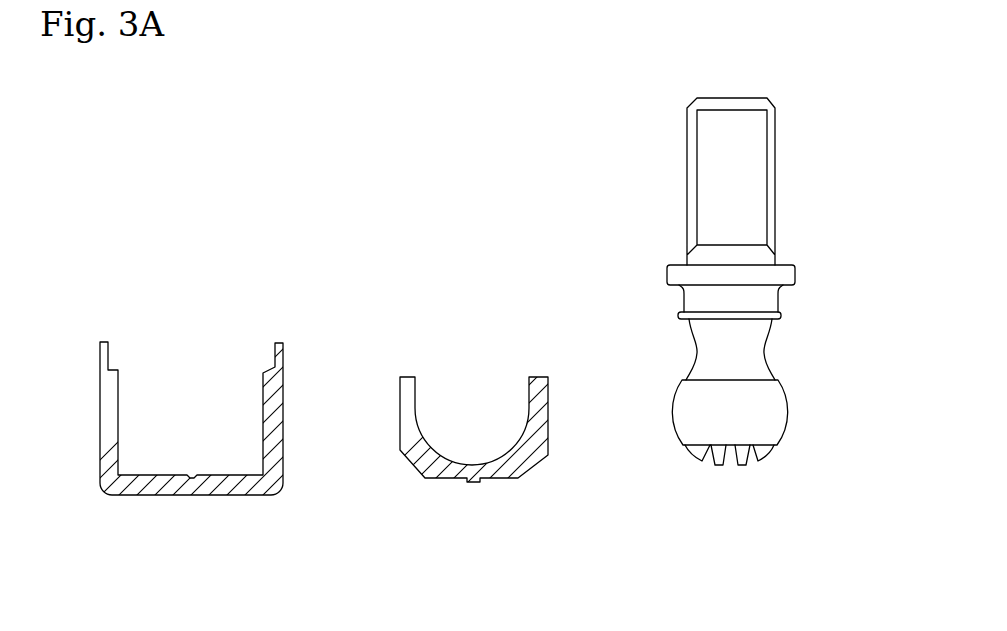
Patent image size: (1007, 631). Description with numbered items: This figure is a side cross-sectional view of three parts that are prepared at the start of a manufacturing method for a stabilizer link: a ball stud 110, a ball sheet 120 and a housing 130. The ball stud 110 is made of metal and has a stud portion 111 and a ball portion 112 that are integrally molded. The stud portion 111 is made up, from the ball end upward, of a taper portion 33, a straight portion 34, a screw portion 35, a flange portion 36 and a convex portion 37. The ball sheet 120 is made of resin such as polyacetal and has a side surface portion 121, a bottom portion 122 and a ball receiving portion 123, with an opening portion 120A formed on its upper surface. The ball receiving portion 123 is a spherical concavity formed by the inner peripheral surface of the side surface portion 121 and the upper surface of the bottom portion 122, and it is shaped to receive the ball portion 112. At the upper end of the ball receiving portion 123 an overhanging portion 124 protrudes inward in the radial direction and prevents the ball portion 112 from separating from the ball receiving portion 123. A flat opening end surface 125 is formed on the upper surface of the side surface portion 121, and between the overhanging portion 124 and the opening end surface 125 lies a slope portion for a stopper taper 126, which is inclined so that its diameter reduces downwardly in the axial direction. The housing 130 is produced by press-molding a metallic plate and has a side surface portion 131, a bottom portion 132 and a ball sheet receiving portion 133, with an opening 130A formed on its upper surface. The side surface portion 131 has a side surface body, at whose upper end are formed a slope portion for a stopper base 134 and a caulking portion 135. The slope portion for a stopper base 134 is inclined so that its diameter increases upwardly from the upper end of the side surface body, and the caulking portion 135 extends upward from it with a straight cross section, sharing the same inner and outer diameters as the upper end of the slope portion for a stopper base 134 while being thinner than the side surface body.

The ball stud 110 is at (742, 286).
The stud portion 111 is at (716, 171).
The ball portion 112 is at (770, 418).
The taper portion 33 is at (753, 360).
The straight portion 34 is at (763, 304).
The screw portion 35 is at (774, 190).
The flange portion 36 is at (783, 278).
The convex portion 37 is at (781, 315).
The ball sheet 120 is at (561, 373).
The opening portion 120A is at (505, 408).
The side surface portion 121 is at (545, 415).
The bottom portion 122 is at (495, 478).
The ball receiving portion 123 is at (417, 419).
The overhanging portion 124 is at (416, 430).
The opening end surface 125 is at (542, 377).
The slope portion for a stopper taper 126 is at (420, 381).
The housing 130 is at (232, 337).
The opening 130A is at (177, 346).
The side surface portion 131 is at (278, 412).
The bottom portion 132 is at (231, 481).
The ball sheet receiving portion 133 is at (120, 447).
The slope portion for a stopper base 134 is at (113, 369).
The caulking portion 135 is at (272, 356).